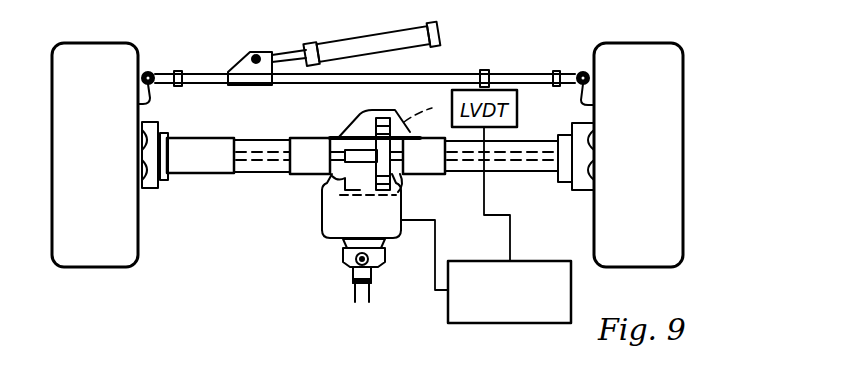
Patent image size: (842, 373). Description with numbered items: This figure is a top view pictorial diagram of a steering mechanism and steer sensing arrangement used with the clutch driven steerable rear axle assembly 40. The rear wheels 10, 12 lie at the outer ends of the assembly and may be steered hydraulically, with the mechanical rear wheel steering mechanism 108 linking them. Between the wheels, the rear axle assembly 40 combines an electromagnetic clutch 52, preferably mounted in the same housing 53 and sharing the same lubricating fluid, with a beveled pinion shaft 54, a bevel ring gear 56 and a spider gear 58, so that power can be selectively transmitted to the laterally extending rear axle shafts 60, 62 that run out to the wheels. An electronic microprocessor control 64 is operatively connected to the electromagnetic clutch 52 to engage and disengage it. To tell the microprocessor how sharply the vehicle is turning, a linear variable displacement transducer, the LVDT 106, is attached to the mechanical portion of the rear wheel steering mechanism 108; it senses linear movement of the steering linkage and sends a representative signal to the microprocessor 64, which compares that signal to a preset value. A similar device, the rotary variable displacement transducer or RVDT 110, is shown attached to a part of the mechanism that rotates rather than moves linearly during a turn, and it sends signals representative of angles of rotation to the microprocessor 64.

The rear wheel 10 is at (624, 48).
The rear wheel 12 is at (109, 48).
The clutch driven steerable rear axle assembly 40 is at (332, 136).
The electromagnetic clutch 52 is at (328, 222).
The housing 53 is at (336, 128).
The beveled pinion shaft 54 is at (330, 188).
The bevel ring gear 56 is at (420, 186).
The spider gear 58 is at (395, 108).
The rear axle shaft 60 is at (503, 175).
The rear axle shaft 62 is at (258, 175).
The electronic microprocessor control 64 is at (505, 325).
The linear variable displacement transducer 106 is at (486, 70).
The rear wheel steering mechanism 108 is at (340, 40).
The rotary variable displacement transducer 110 is at (226, 175).